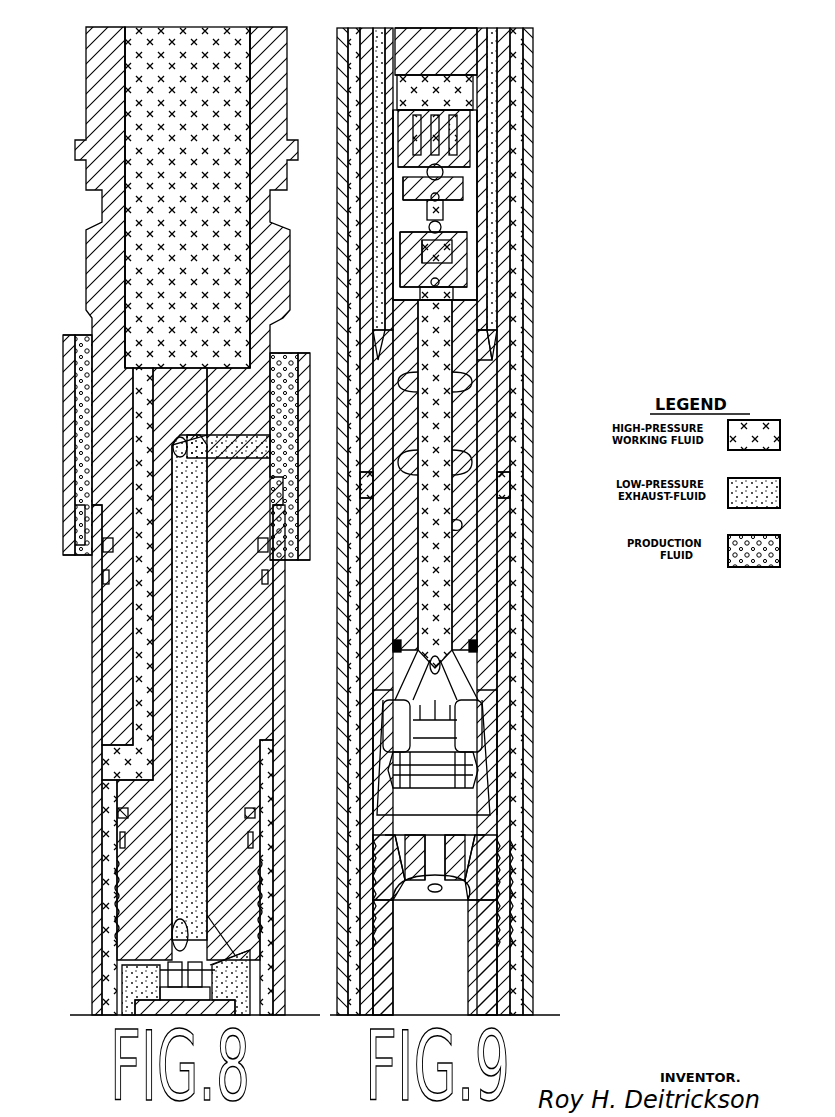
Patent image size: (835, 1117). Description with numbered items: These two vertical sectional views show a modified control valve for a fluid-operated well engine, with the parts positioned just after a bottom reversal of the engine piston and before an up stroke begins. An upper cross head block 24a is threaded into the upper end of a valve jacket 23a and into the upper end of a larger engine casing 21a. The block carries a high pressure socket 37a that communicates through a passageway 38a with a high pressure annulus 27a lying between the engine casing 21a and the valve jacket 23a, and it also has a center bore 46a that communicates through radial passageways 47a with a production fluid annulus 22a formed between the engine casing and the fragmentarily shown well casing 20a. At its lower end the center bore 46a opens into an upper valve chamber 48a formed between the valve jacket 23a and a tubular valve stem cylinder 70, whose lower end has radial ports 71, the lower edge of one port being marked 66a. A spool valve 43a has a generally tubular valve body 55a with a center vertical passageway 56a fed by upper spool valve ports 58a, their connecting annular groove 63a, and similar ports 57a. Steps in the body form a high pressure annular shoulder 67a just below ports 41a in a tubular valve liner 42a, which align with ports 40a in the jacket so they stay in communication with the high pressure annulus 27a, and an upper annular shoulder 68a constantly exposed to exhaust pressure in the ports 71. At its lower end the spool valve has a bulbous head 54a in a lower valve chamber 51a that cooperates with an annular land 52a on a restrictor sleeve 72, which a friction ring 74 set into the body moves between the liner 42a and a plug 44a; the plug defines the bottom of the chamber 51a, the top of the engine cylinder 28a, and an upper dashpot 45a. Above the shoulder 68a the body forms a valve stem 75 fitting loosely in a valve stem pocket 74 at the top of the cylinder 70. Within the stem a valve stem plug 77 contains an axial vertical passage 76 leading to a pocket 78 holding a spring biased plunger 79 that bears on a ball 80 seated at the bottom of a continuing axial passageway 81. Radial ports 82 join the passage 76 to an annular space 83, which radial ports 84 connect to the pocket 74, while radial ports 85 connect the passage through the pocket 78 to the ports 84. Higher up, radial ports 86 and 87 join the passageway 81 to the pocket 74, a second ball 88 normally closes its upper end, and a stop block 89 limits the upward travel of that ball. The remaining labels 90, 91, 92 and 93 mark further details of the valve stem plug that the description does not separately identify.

In FIG. 8, the well casing 20a is at (63, 372).
In FIG. 8, the engine casing 21a is at (281, 785).
In FIG. 9, the engine casing 21a is at (534, 696).
In FIG. 8, the production fluid annulus 22a is at (82, 548).
In FIG. 8, the valve jacket 23a is at (270, 895).
In FIG. 9, the valve jacket 23a is at (533, 392).
In FIG. 8, the upper cross head block 24a is at (100, 675).
In FIG. 8, the high pressure annulus 27a is at (106, 829).
In FIG. 9, the high pressure annulus 27a is at (516, 952).
In FIG. 9, the engine cylinder 28a is at (511, 912).
In FIG. 8, the high pressure socket 37a is at (252, 184).
In FIG. 8, the passageway 38a is at (135, 443).
In FIG. 9, the ports 40a is at (511, 496).
In FIG. 9, the ports 41a is at (503, 486).
In FIG. 9, the tubular valve liner 42a is at (497, 572).
In FIG. 9, the spool valve 43a is at (485, 430).
In FIG. 9, the plug 44a is at (500, 906).
In FIG. 9, the upper dashpot 45a is at (462, 992).
In FIG. 8, the center bore 46a is at (175, 612).
In FIG. 8, the radial passageways 47a is at (280, 448).
In FIG. 8, the upper valve chamber 48a is at (125, 991).
In FIG. 9, the upper valve chamber 48a is at (534, 45).
In FIG. 9, the lower valve chamber 51a is at (470, 800).
In FIG. 9, the annular land 52a is at (383, 742).
In FIG. 9, the bulbous head 54a is at (472, 750).
In FIG. 9, the valve body 55a is at (481, 560).
In FIG. 9, the center vertical passageway 56a is at (456, 526).
In FIG. 9, the ports 57a is at (468, 460).
In FIG. 9, the upper spool valve ports 58a is at (466, 372).
In FIG. 9, the annular groove 63a is at (476, 386).
In FIG. 9, the lower edge of port 66a is at (479, 332).
In FIG. 9, the high pressure annular shoulder 67a is at (455, 512).
In FIG. 9, the upper annular shoulder 68a is at (470, 264).
In FIG. 9, the tubular valve stem cylinder 70 is at (478, 242).
In FIG. 9, the radial ports 71 is at (481, 300).
In FIG. 9, the restrictor sleeve 72 is at (498, 672).
In FIG. 9, the friction ring 74 is at (440, 126).
In FIG. 9, the valve stem 75 is at (470, 226).
In FIG. 9, the axial vertical passage 76 is at (460, 241).
In FIG. 9, the valve stem plug 77 is at (450, 118).
In FIG. 9, the pocket 78 is at (440, 201).
In FIG. 9, the spring biased plunger 79 is at (408, 271).
In FIG. 9, the ball 80 is at (450, 166).
In FIG. 9, the continuing axial passageway 81 is at (410, 216).
In FIG. 9, the radial ports 82 is at (405, 286).
In FIG. 9, the annular space 83 is at (400, 301).
In FIG. 9, the radial ports 84 is at (406, 256).
In FIG. 9, the radial ports 85 is at (455, 191).
In FIG. 9, the radial ports 86 is at (410, 186).
In FIG. 9, the radial ports 87 is at (406, 170).
In FIG. 9, the second ball 88 is at (470, 96).
In FIG. 9, the stop block 89 is at (466, 86).
In FIG. 9, the seat plate 90 is at (405, 201).
In FIG. 9, the passage 91 is at (455, 176).
In FIG. 9, the top plate 92 is at (396, 130).
In FIG. 9, the cap 93 is at (400, 86).